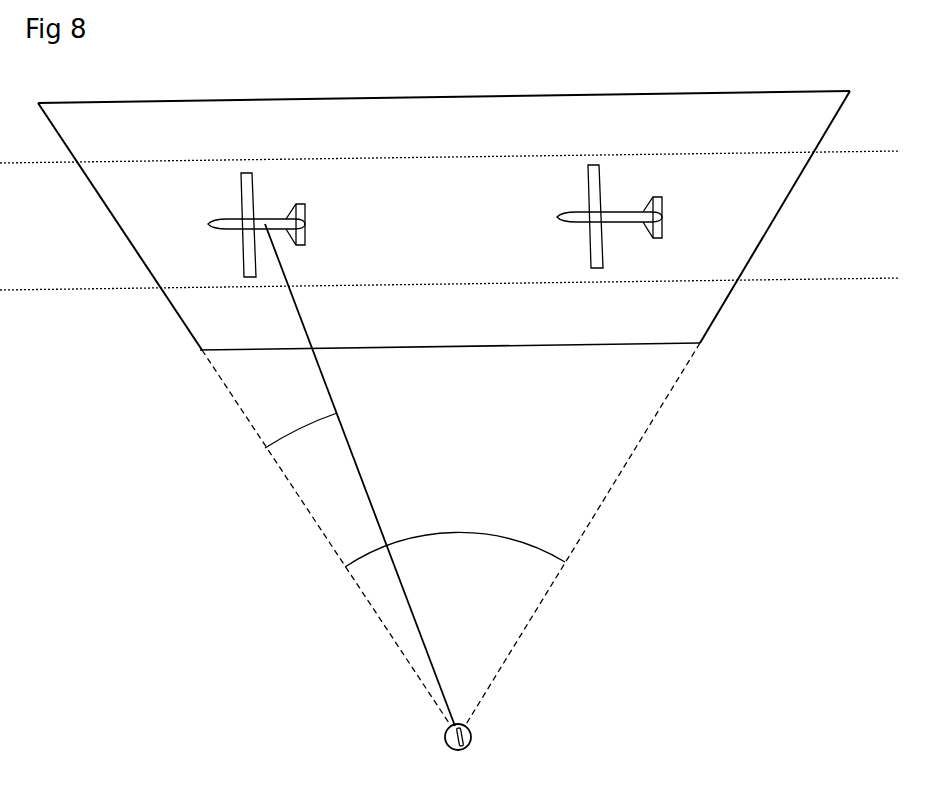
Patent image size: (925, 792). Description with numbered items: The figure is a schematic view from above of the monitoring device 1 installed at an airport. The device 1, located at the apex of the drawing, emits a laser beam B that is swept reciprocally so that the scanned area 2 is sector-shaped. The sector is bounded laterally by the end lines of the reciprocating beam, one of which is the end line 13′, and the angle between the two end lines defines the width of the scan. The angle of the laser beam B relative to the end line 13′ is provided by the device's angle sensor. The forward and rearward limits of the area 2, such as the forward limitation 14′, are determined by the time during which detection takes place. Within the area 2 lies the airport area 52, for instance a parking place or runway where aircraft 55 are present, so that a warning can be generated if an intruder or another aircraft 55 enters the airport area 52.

The device 1 is at (466, 732).
The area 2 is at (443, 327).
The airport area 52 is at (453, 208).
The aircraft 55 is at (253, 200).
The end line 13′ is at (172, 297).
The forward limitation 14′ is at (467, 350).
The laser beam B is at (360, 463).